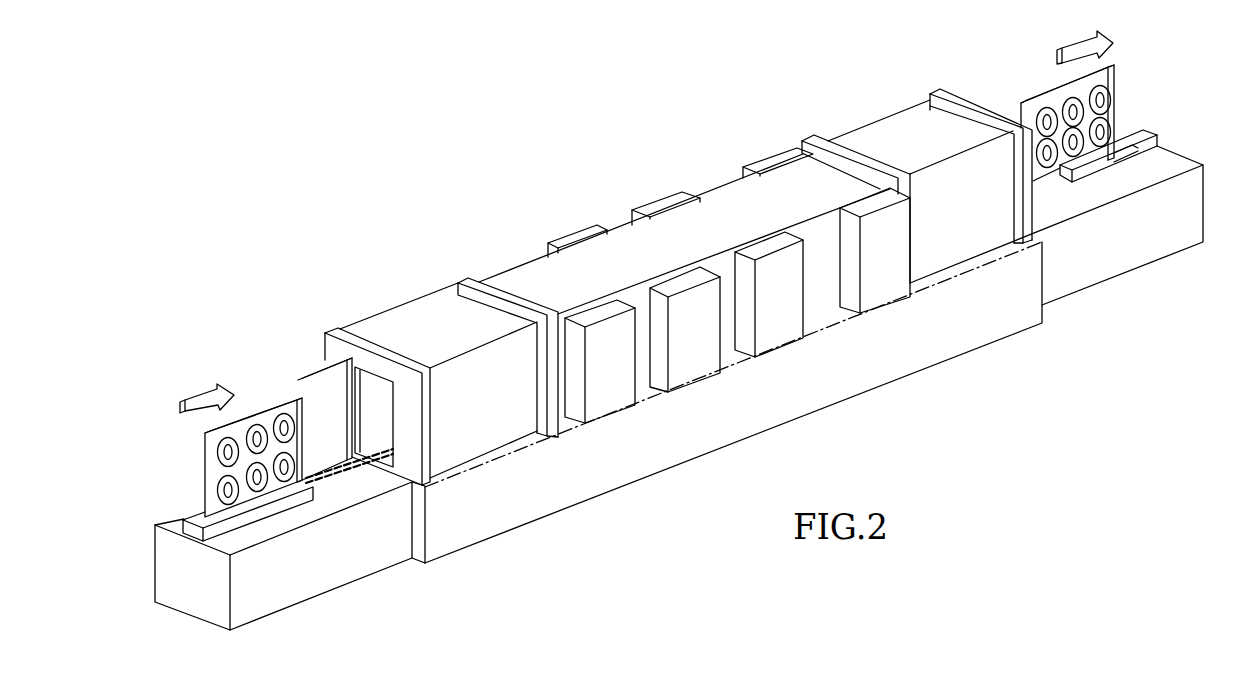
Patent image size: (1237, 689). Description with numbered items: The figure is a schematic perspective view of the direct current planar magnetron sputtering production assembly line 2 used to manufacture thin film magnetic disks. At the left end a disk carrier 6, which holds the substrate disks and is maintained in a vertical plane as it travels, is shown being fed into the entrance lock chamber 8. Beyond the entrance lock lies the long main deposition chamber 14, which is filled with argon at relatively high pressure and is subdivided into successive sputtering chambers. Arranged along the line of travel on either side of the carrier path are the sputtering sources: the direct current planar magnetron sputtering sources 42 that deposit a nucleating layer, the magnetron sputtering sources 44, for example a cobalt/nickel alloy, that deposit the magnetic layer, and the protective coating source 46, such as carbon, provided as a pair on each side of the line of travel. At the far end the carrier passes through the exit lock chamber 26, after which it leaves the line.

The direct current planar magnetron sputtering production assembly line 2 is at (343, 298).
The disk carrier 6 is at (281, 397).
The entrance lock chamber 8 is at (458, 451).
The main deposition chamber 14 is at (722, 200).
The exit lock chamber 26 is at (957, 122).
The direct current planar magnetron sputtering sources 42 is at (483, 263).
The magnetron sputtering sources 44 is at (653, 194).
The protective coating source 46 is at (767, 157).